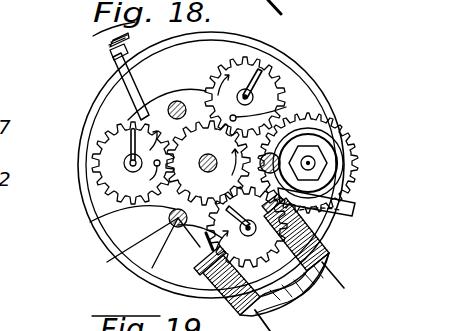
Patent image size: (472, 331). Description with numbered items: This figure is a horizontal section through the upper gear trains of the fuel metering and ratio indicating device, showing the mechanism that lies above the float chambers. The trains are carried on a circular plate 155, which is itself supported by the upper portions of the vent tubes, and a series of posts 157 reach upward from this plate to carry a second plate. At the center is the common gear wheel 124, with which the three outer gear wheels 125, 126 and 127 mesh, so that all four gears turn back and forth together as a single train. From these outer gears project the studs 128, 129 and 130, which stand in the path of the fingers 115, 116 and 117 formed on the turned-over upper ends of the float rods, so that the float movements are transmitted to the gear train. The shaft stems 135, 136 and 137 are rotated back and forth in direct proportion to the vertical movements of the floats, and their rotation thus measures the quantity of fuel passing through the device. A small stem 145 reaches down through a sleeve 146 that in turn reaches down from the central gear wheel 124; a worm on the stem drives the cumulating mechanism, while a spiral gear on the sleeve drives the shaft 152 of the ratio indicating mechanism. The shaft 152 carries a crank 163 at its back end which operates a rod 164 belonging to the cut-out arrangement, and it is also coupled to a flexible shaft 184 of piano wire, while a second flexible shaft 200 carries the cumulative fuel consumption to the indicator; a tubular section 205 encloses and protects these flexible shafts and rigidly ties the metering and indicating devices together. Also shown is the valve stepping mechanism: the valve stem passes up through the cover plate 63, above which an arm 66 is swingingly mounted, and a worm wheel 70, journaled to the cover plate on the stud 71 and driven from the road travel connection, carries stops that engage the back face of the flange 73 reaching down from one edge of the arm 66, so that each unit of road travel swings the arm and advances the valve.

The cover plate 63 is at (167, 87).
The arm 66 is at (356, 208).
The worm wheel 70 is at (333, 145).
The stud 71 is at (322, 150).
The flange 73 is at (345, 214).
The finger 115 is at (98, 161).
The finger 116 is at (270, 88).
The finger 117 is at (176, 238).
The central gear wheel 124 is at (169, 226).
The gear wheel 125 is at (80, 175).
The gear wheel 126 is at (287, 109).
The gear wheel 127 is at (314, 235).
The stud 128 is at (131, 177).
The stud 129 is at (306, 115).
The stud 130 is at (236, 214).
The shaft stem 135 is at (130, 142).
The shaft stem 136 is at (244, 88).
The shaft stem 137 is at (247, 227).
The stem 145 is at (208, 163).
The sleeve 146 is at (211, 176).
The shaft 152 is at (93, 76).
The circular plate 155 is at (100, 220).
The post 157 is at (124, 247).
The crank 163 is at (111, 57).
The rod 164 is at (112, 43).
The flexible shaft 184 is at (283, 5).
The flexible shaft 200 is at (324, 292).
The tubular section 205 is at (324, 234).